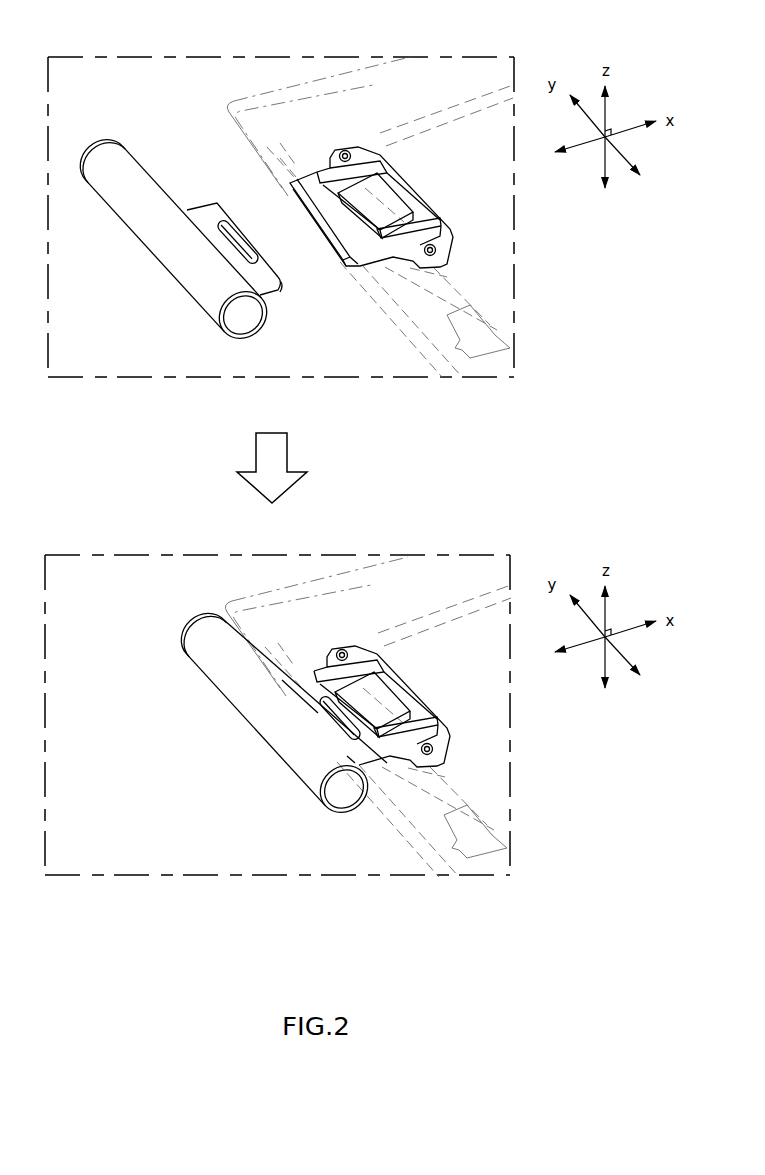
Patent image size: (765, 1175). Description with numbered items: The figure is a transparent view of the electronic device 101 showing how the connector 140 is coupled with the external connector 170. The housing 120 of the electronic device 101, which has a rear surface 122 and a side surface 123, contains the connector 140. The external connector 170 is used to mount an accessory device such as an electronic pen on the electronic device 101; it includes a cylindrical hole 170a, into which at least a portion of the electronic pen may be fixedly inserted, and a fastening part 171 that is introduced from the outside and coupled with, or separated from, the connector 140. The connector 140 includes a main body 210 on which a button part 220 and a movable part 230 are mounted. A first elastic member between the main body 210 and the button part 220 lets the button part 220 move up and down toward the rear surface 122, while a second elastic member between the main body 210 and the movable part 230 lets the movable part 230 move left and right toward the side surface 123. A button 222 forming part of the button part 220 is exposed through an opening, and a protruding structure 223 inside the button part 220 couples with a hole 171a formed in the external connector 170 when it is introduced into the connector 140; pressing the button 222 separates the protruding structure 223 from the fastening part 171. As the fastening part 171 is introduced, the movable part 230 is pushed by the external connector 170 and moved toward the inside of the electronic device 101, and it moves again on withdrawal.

The electronic device 101 is at (258, 72).
The housing 120 is at (477, 438).
The rear surface 122 is at (436, 310).
The side surface 123 is at (407, 330).
The connector 140 is at (360, 143).
The external connector 170 is at (113, 146).
The hole 170a is at (228, 340).
The fastening part 171 is at (203, 208).
The hole 171a is at (233, 257).
The main body 210 is at (440, 246).
The button part 220 is at (348, 193).
The button 222 is at (393, 203).
The protruding structure 223 is at (333, 722).
The movable part 230 is at (348, 262).